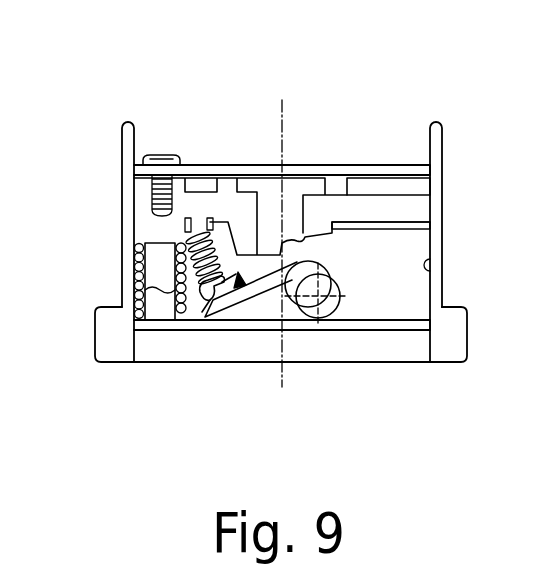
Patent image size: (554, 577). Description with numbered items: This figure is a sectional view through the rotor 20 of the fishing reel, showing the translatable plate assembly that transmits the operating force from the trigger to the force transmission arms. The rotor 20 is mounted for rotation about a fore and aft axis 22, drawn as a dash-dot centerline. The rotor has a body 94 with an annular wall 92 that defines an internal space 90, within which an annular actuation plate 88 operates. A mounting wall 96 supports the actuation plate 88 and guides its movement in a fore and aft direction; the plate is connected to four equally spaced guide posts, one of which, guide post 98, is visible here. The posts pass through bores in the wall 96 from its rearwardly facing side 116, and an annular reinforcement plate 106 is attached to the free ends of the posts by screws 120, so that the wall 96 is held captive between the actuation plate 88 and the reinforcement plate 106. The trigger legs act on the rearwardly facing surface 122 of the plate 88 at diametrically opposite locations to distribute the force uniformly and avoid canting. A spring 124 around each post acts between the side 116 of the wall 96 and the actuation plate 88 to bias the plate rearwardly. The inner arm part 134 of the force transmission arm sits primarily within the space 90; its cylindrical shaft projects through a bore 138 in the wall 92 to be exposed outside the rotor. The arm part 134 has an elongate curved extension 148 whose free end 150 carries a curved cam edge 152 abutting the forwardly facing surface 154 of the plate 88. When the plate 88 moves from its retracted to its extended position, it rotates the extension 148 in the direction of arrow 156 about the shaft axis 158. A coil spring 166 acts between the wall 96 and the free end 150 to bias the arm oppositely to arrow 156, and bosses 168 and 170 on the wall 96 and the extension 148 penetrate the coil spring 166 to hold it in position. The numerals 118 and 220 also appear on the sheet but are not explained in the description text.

The rotor 20 is at (122, 285).
The fore and aft axis 22 is at (284, 108).
The actuation plate 88 is at (383, 331).
The internal space 90 is at (442, 268).
The annular wall 92 is at (428, 212).
The body 94 is at (131, 136).
The mounting wall 96 is at (317, 207).
The guide post 98 is at (160, 240).
The reinforcement plate 106 is at (232, 172).
The rearwardly facing side 116 is at (415, 232).
The upper bar 118 is at (338, 172).
The screw 120 is at (167, 155).
The rearwardly facing surface 122 is at (135, 338).
The spring 124 is at (133, 258).
The second arm part 134 is at (262, 300).
The bore 138 is at (332, 300).
The curved extension 148 is at (212, 318).
The free end 150 is at (208, 302).
The curved cam edge 152 is at (212, 312).
The forwardly facing surface 154 is at (405, 310).
The arrow 156 is at (297, 333).
The axis 158 is at (318, 297).
The coil spring 166 is at (182, 240).
The boss 168 is at (238, 290).
The boss 170 is at (205, 220).
The partial numeral 220 is at (523, 7).